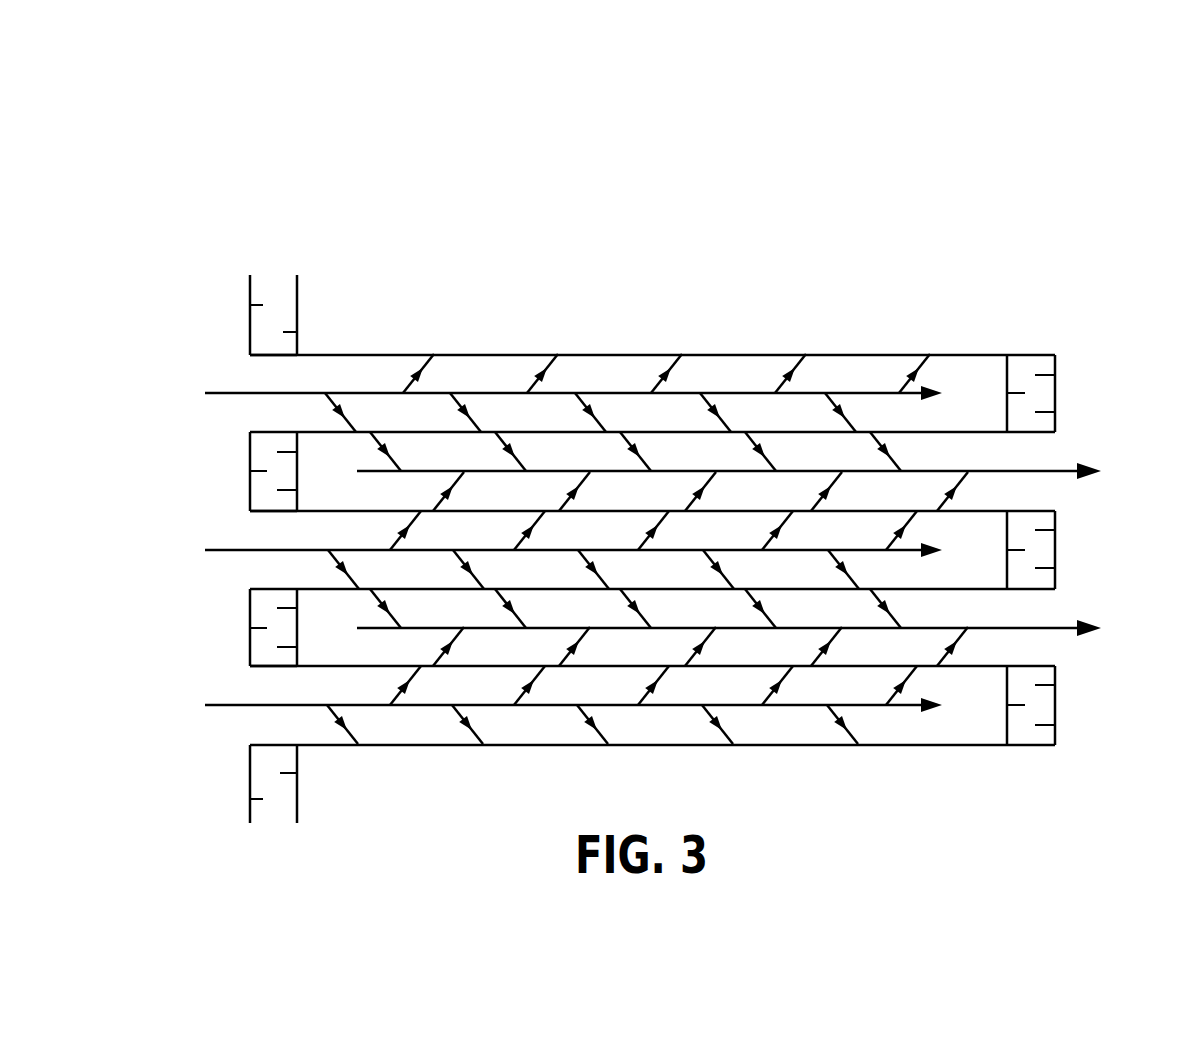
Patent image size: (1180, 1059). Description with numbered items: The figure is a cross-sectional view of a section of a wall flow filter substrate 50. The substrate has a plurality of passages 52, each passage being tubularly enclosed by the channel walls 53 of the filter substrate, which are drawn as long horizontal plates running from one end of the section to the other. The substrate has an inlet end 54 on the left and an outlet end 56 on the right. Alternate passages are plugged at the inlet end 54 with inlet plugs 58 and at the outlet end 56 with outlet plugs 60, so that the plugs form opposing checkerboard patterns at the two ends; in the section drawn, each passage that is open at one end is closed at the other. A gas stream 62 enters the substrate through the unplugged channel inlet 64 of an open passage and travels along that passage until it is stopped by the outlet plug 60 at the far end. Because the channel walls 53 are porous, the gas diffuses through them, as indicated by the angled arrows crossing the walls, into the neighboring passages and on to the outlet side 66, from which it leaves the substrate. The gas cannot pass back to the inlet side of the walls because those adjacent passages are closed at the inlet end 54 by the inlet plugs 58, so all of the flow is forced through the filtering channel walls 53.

The wall flow filter substrate 50 is at (304, 77).
The passages 52 is at (323, 448).
The channel walls 53 is at (625, 438).
The inlet end 54 is at (217, 251).
The outlet end 56 is at (1102, 326).
The inlet plugs 58 is at (256, 324).
The outlet plugs 60 is at (1055, 398).
The gas stream 62 is at (377, 393).
The unplugged channel inlet 64 is at (280, 389).
The outlet side 66 is at (1048, 505).